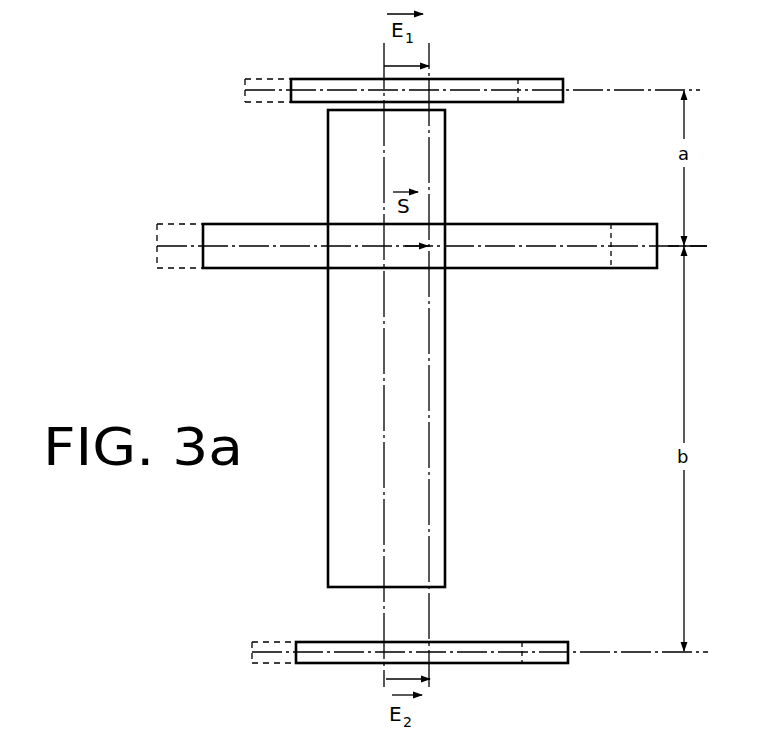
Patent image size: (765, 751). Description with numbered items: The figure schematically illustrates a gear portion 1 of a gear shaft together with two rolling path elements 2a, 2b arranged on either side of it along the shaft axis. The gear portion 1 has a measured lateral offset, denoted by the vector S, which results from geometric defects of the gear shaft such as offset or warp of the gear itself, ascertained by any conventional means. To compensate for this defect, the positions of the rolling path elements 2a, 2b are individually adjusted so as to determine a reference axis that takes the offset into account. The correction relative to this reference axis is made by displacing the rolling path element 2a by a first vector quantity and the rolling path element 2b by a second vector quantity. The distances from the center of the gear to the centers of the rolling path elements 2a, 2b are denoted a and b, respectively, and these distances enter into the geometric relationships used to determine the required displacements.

The gear portion 1 is at (520, 255).
The rolling path element 2a is at (488, 88).
The rolling path element 2b is at (488, 656).